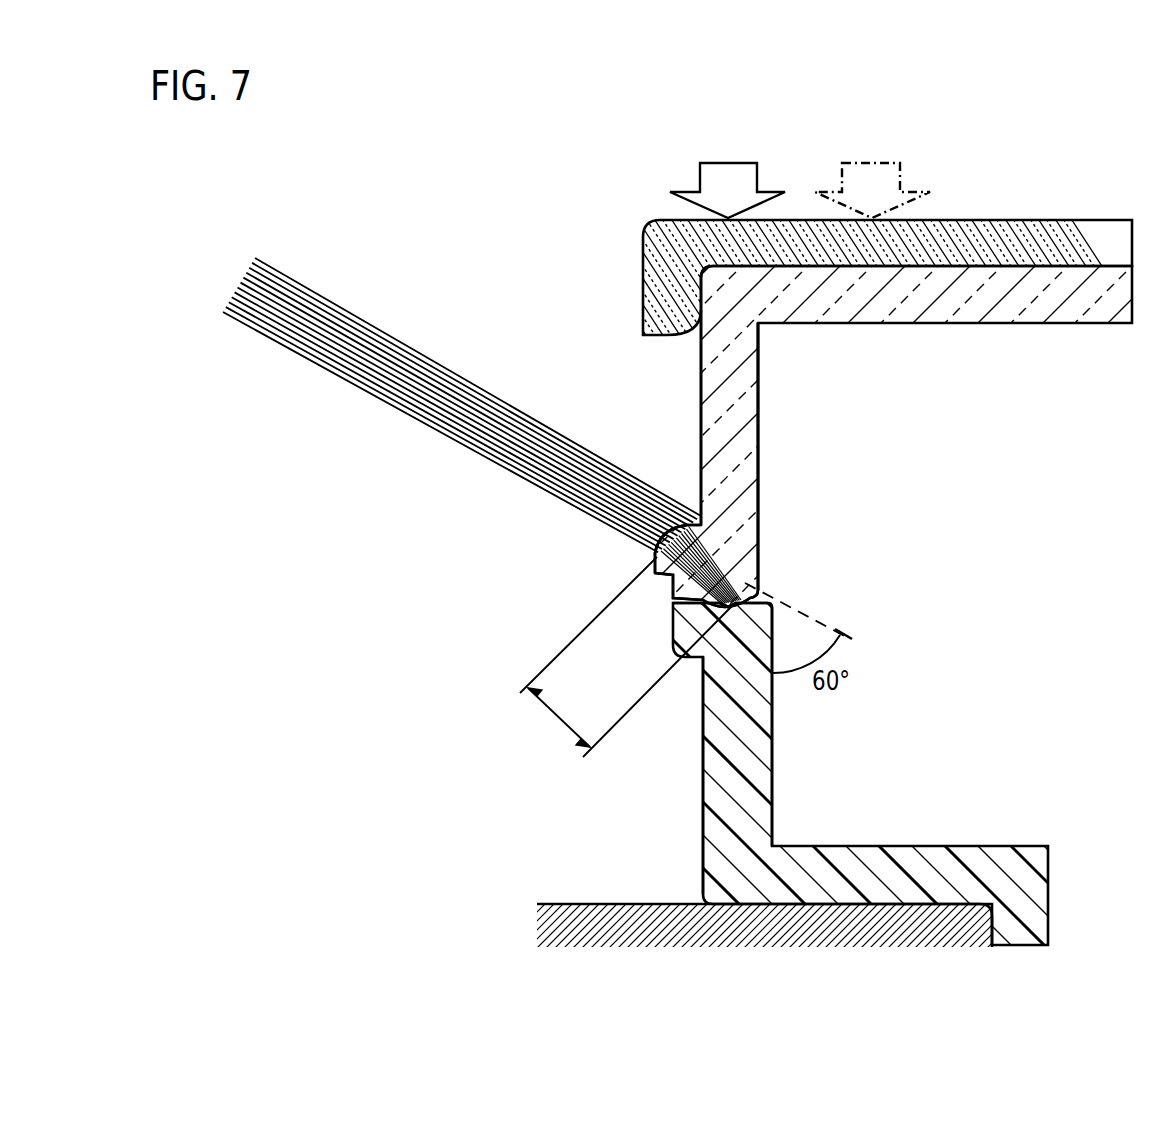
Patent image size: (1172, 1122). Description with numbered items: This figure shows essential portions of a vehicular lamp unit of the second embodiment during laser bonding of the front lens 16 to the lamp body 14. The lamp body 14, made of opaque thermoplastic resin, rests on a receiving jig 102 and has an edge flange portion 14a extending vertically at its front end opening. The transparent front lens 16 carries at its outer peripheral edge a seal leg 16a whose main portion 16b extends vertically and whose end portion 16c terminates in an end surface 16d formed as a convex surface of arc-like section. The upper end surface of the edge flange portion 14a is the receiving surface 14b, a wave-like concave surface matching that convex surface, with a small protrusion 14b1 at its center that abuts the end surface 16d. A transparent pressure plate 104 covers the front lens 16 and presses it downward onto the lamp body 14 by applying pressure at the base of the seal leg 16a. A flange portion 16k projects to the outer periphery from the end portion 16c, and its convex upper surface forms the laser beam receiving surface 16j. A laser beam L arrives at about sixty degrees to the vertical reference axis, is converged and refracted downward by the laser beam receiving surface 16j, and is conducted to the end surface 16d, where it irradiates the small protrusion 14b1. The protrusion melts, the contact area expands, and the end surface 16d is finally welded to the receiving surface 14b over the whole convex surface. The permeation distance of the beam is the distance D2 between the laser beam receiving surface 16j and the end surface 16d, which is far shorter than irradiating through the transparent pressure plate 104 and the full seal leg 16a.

The transparent pressure plate 104 is at (642, 237).
The receiving jig 102 is at (616, 900).
The front lens 16 is at (968, 327).
The seal leg 16a is at (760, 400).
The main portion of the seal leg 16b is at (728, 400).
The end portion of the seal leg 16c is at (662, 590).
The end surface of the seal leg 16d is at (773, 613).
The laser beam receiving surface 16j is at (688, 526).
The flange portion 16k is at (653, 565).
The lamp body 14 is at (975, 836).
The edge flange portion 14a is at (777, 760).
The receiving surface 14b is at (742, 600).
The small protrusion 14b1 is at (737, 598).
The laser beam L is at (420, 408).
The permeation distance D2 is at (626, 657).